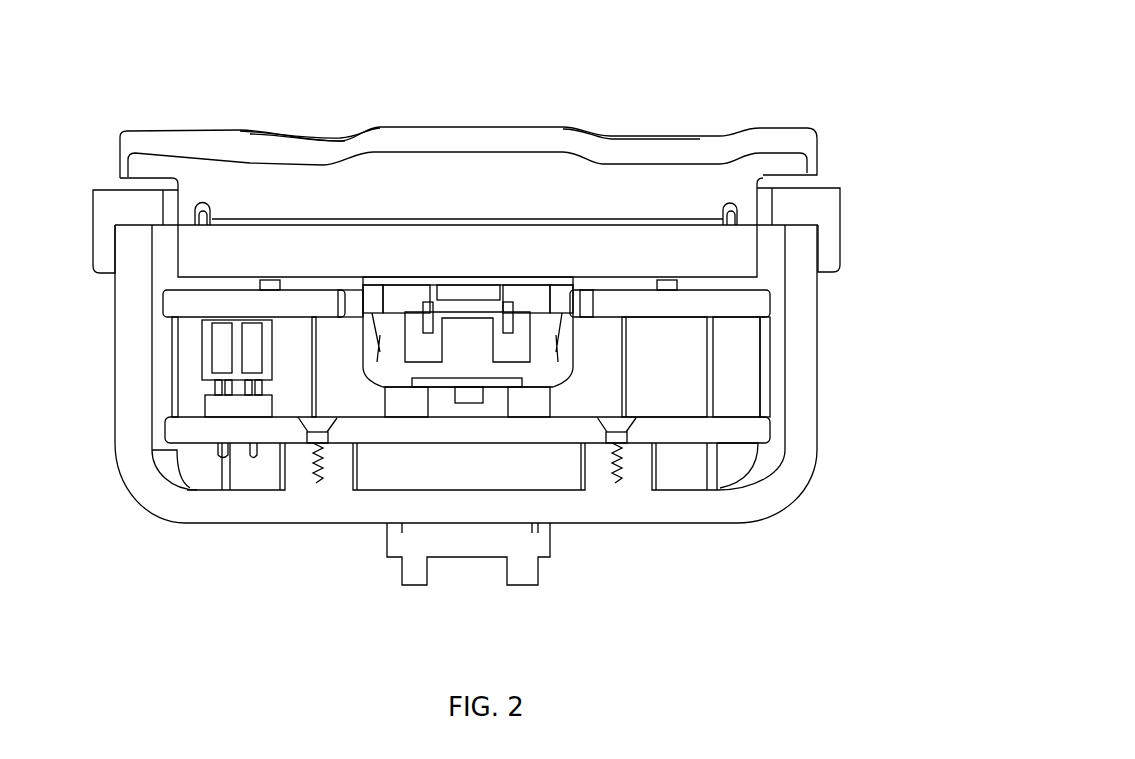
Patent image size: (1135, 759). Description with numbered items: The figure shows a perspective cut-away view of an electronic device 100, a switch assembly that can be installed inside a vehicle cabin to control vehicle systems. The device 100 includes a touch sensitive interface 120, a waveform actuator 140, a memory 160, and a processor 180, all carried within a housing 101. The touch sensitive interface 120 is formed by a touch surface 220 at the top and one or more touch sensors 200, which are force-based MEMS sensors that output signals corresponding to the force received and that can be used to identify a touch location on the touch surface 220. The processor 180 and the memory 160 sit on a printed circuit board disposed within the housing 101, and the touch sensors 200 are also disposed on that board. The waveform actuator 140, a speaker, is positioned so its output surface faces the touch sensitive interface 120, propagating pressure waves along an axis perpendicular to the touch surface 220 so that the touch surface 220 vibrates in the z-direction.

The electronic device 100 is at (501, 350).
The housing 101 is at (780, 495).
The touch sensitive interface 120 is at (536, 258).
The waveform actuator 140 is at (467, 353).
The memory 160 is at (188, 308).
The processor 180 is at (237, 368).
The touch sensors 200 is at (270, 287).
The touch surface 220 is at (658, 195).